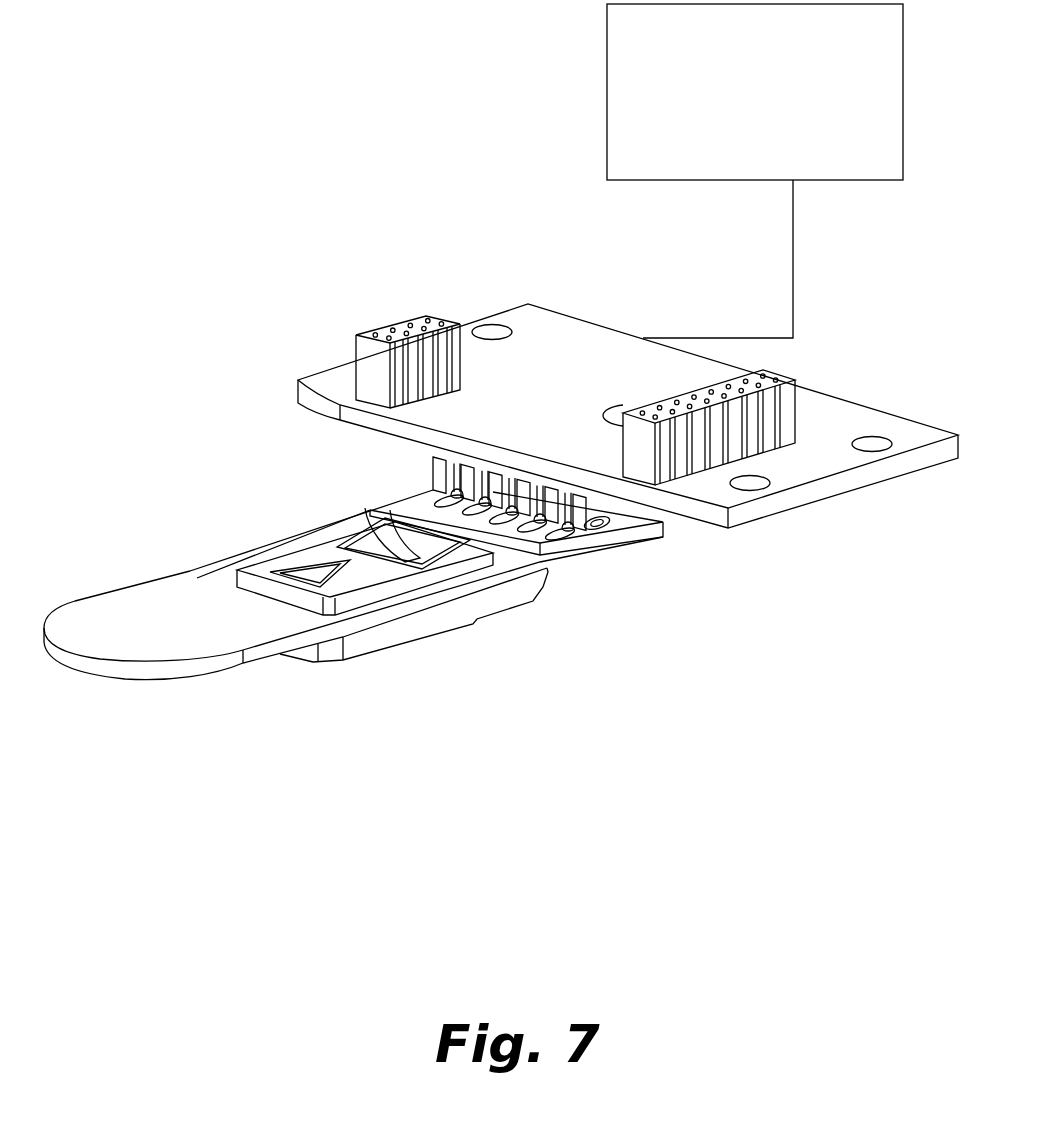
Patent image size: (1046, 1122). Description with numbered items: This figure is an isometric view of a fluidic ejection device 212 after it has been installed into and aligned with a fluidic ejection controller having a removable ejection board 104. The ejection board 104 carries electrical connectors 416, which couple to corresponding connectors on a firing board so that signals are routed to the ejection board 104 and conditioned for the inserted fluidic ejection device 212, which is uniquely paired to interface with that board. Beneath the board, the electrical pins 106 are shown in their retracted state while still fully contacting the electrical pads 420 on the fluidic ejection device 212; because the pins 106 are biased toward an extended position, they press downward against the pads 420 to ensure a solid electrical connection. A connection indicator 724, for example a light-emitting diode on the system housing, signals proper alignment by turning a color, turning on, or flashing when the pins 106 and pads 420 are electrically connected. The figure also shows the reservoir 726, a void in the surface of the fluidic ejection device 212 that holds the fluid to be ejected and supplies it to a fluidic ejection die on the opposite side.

The connection indicator 724 is at (755, 171).
The ejection board 104 is at (317, 377).
The electrical connectors 416 is at (427, 332).
The electrical pads 420 is at (582, 532).
The electrical pins 106 is at (598, 522).
The reservoir 726 is at (370, 513).
The fluidic ejection device 212 is at (170, 595).